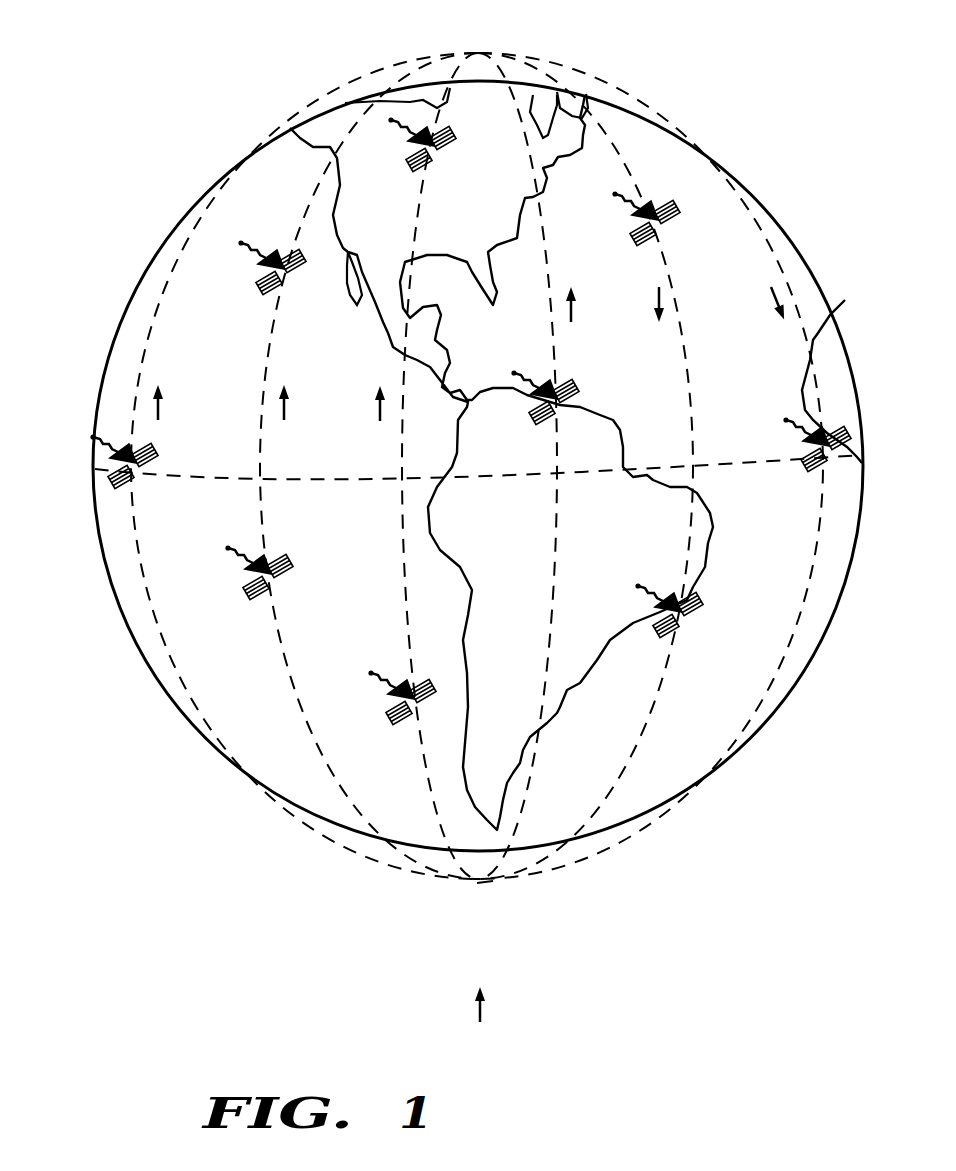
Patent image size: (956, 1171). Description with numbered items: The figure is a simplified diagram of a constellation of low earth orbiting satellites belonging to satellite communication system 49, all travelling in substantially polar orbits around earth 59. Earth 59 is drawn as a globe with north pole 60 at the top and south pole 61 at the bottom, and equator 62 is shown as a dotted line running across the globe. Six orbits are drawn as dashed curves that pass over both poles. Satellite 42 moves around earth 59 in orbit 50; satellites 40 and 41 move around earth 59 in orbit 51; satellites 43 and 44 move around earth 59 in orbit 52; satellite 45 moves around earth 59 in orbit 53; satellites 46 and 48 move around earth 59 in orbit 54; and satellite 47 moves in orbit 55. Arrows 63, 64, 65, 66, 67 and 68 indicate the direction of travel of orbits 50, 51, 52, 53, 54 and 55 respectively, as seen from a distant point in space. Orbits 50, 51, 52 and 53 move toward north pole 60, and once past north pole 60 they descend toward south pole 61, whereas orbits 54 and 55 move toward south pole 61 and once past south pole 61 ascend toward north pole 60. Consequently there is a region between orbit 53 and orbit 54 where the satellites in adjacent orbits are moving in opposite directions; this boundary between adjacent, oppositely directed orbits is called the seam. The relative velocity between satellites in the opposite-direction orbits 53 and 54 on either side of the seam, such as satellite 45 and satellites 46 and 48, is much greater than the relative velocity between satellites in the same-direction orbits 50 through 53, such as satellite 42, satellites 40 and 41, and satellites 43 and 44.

The satellite 40 is at (268, 287).
The satellite 41 is at (292, 556).
The satellite 42 is at (145, 478).
The satellite 43 is at (426, 686).
The satellite 44 is at (436, 154).
The satellite 45 is at (535, 420).
The satellite 46 is at (676, 218).
The satellite 47 is at (805, 472).
The satellite 48 is at (686, 632).
The satellite communication system 49 is at (479, 1022).
The orbit 50 is at (168, 648).
The orbit 51 is at (302, 712).
The orbit 52 is at (428, 783).
The orbit 53 is at (531, 784).
The orbit 54 is at (650, 732).
The orbit 55 is at (790, 648).
The earth 59 is at (118, 338).
The north pole 60 is at (480, 72).
The south pole 61 is at (482, 857).
The equator 62 is at (590, 480).
The arrow 63 is at (158, 410).
The arrow 64 is at (285, 408).
The arrow 65 is at (380, 410).
The arrow 66 is at (573, 313).
The arrow 67 is at (658, 300).
The arrow 68 is at (772, 292).